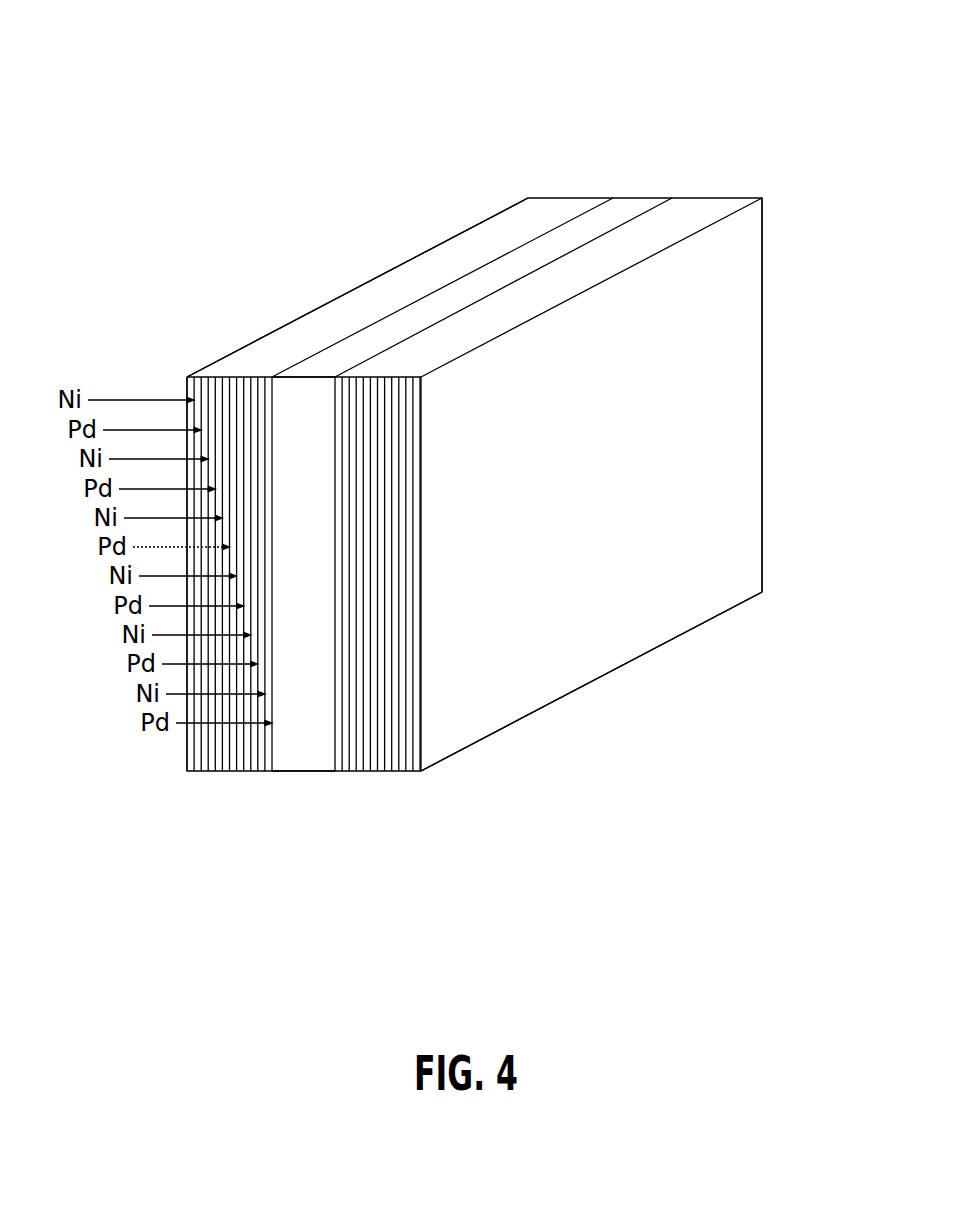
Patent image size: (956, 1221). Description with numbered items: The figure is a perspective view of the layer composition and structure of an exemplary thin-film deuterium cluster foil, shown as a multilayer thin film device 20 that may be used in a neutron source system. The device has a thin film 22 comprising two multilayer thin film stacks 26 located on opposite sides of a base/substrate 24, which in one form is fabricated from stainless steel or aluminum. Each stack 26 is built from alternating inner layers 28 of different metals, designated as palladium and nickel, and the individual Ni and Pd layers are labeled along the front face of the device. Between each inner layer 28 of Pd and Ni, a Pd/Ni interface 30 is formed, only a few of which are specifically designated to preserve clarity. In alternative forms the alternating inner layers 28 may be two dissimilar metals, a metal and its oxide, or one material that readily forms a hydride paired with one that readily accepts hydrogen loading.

The multilayer thin film device 20 is at (733, 100).
The thin film 22 is at (763, 195).
The base/substrate 24 is at (629, 208).
The multilayer thin film stack 26 is at (496, 234).
The inner layer 28 is at (408, 470).
The Pd/Ni interface 30 is at (409, 566).